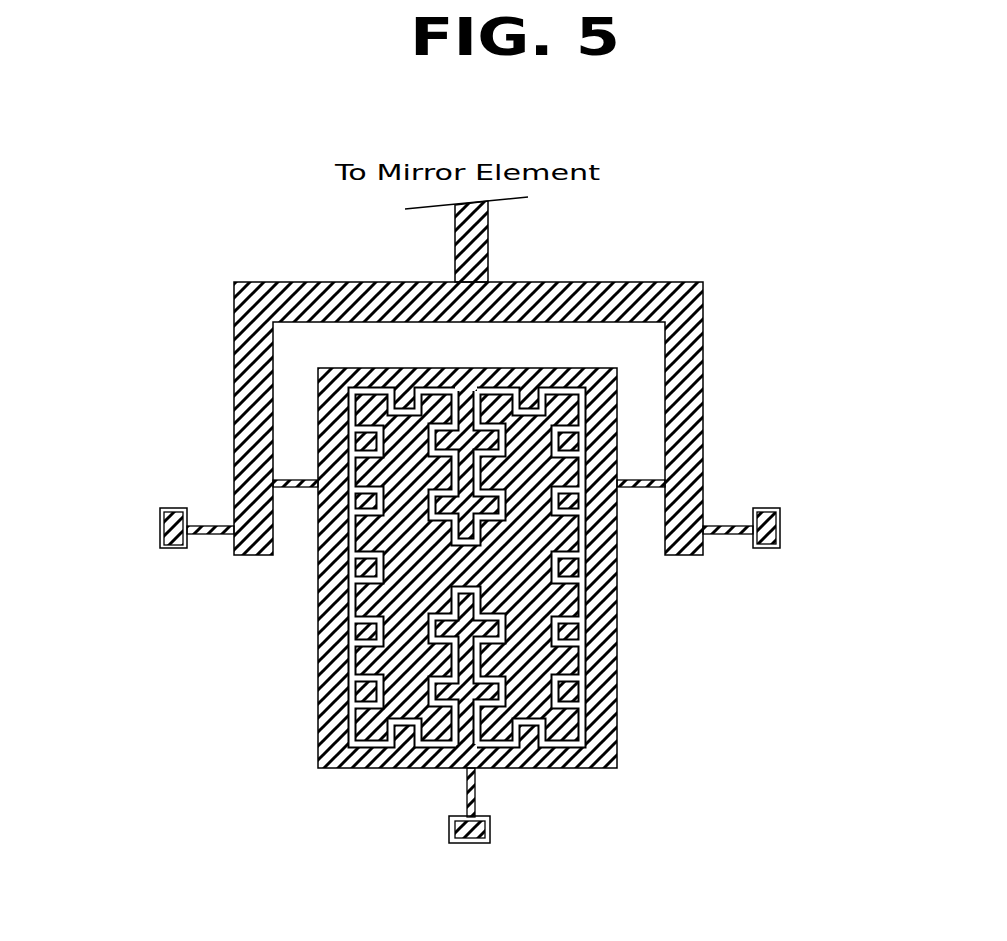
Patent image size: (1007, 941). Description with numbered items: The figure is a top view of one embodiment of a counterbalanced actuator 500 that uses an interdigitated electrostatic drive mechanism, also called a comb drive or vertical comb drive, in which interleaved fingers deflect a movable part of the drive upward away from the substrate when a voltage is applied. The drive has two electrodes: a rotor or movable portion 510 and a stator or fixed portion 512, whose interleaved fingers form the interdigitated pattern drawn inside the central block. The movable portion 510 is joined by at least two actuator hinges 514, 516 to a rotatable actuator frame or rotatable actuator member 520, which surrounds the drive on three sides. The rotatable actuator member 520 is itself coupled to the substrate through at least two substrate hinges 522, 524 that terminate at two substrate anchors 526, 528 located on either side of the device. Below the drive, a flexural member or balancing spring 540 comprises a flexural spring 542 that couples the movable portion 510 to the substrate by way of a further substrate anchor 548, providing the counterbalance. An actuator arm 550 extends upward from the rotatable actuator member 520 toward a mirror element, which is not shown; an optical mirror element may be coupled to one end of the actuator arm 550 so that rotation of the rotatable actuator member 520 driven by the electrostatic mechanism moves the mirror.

The counterbalanced actuator 500 is at (160, 180).
The movable portion 510 is at (534, 615).
The fixed portion 512 is at (570, 679).
The actuator hinge 514 is at (633, 487).
The actuator hinge 516 is at (303, 487).
The rotatable actuator member 520 is at (662, 282).
The substrate hinge 522 is at (728, 524).
The substrate hinge 524 is at (209, 525).
The substrate anchor 526 is at (780, 527).
The substrate anchor 528 is at (162, 527).
The balancing spring 540 is at (414, 843).
The flexural spring 542 is at (467, 803).
The substrate anchor 548 is at (452, 830).
The actuator arm 550 is at (487, 240).